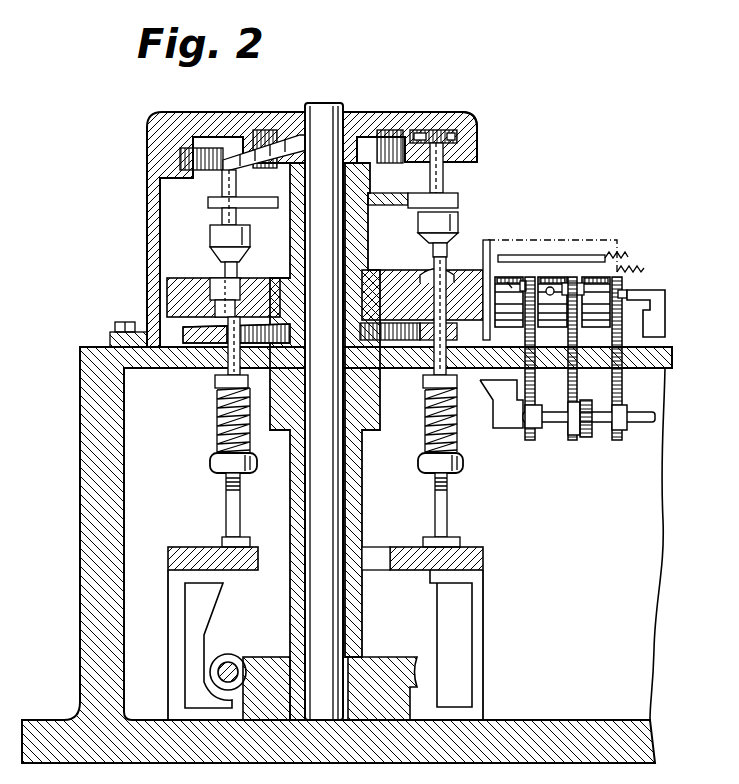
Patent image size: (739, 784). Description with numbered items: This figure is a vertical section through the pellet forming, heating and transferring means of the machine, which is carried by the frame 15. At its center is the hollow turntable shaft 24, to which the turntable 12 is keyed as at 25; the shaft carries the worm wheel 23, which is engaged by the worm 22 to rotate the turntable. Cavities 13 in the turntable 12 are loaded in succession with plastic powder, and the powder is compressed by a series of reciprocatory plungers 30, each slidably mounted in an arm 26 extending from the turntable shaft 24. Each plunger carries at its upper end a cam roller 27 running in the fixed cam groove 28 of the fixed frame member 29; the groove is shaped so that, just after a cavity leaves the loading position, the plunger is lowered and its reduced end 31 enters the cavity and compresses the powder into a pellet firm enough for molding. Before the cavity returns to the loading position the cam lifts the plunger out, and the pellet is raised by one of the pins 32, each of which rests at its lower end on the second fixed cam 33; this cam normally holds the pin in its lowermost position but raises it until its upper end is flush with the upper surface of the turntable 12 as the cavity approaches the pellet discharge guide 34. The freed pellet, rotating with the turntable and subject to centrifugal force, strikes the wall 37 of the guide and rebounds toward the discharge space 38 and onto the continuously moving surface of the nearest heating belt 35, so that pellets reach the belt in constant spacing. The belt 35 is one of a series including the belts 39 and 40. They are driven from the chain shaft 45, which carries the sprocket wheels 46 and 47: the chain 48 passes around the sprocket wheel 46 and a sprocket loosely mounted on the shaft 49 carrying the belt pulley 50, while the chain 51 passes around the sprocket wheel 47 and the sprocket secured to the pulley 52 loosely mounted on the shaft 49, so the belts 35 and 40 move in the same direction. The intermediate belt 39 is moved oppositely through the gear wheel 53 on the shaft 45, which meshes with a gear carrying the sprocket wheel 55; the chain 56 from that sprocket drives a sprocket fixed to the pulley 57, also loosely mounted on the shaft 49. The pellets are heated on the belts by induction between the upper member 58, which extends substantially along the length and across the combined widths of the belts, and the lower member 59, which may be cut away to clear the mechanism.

The turntable 12 is at (182, 281).
The cavities 13 is at (245, 277).
The frame 15 is at (660, 566).
The worm 22 is at (229, 654).
The worm wheel 23 is at (396, 656).
The hollow turntable shaft 24 is at (362, 520).
The key 25 is at (370, 268).
The arm 26 is at (386, 200).
The cam roller 27 is at (466, 125).
The fixed cam groove 28 is at (426, 135).
The fixed frame member 29 is at (386, 113).
The reciprocatory plungers 30 is at (446, 186).
The reduced end 31 is at (448, 252).
The pins 32 is at (427, 279).
The second fixed cam 33 is at (195, 338).
The pellet discharge guide 34 is at (485, 240).
The heating belt 35 is at (524, 278).
The wall 37 is at (432, 272).
The discharge space 38 is at (508, 280).
The belt 39 is at (563, 280).
The belt 40 is at (589, 276).
The chain shaft 45 is at (643, 426).
The sprocket wheel 46 is at (623, 432).
The sprocket wheel 47 is at (542, 430).
The chain 48 is at (624, 396).
The shaft 49 is at (628, 291).
The belt pulley 50 is at (595, 326).
The chain 51 is at (537, 392).
The pulley 52 is at (509, 326).
The gear wheel 53 is at (592, 438).
The sprocket wheel 55 is at (568, 440).
The chain 56 is at (579, 390).
The pulley 57 is at (549, 326).
The upper member 58 is at (584, 254).
The lower member 59 is at (549, 283).